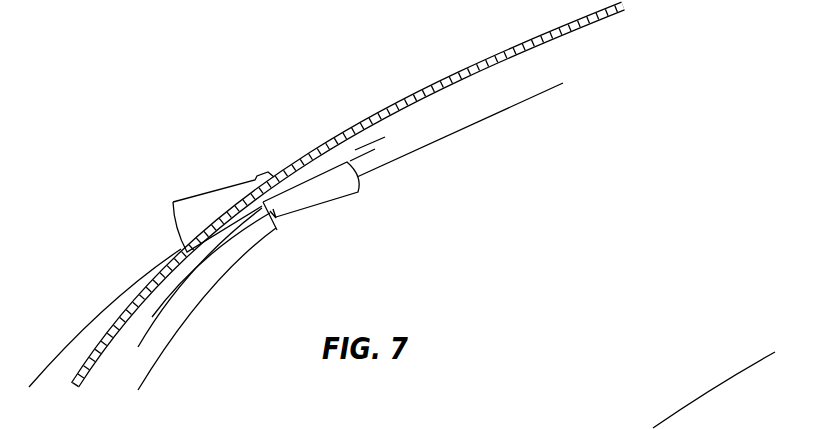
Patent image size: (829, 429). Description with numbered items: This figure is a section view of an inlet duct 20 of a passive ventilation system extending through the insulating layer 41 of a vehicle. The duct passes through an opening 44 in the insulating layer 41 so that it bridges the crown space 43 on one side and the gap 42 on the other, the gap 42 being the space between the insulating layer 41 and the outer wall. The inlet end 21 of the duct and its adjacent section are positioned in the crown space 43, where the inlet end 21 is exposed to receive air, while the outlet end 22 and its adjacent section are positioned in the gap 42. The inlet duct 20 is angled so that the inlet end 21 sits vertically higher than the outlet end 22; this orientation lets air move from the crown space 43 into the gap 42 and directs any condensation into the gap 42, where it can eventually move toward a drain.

The inlet duct 20 is at (262, 112).
The inlet end 21 is at (358, 193).
The outlet end 22 is at (173, 227).
The insulating layer 41 is at (437, 125).
The gap 42 is at (68, 273).
The crown space 43 is at (578, 141).
The opening 44 is at (276, 218).